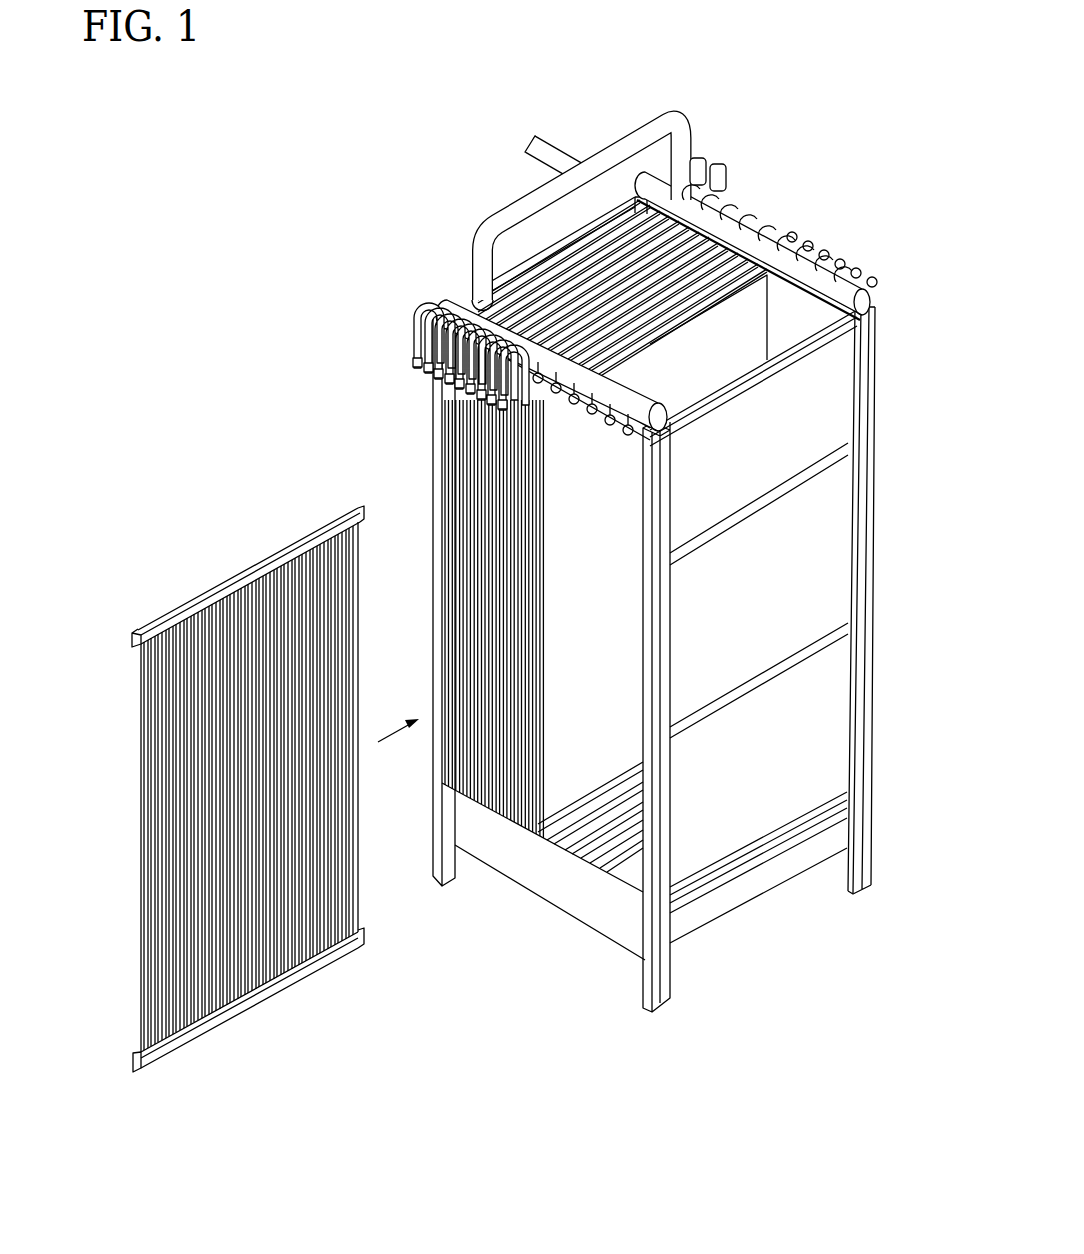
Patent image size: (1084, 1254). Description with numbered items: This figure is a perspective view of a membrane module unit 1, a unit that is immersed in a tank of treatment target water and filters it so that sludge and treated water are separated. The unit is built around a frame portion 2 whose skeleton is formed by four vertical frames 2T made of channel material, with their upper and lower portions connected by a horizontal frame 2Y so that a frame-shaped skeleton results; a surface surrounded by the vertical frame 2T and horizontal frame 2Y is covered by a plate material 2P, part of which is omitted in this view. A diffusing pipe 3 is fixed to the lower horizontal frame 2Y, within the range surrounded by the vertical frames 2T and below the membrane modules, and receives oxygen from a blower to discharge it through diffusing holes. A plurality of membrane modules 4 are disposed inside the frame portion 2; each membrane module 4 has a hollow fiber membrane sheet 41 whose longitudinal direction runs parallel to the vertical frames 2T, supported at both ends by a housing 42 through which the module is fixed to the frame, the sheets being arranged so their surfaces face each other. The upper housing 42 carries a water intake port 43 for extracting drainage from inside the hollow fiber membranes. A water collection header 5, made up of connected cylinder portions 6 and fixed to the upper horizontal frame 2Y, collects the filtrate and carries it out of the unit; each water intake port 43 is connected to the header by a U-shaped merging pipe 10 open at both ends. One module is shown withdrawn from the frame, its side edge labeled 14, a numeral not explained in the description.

The membrane module unit 1 is at (455, 150).
The frame portion 2 is at (642, 599).
The vertical frame 2T is at (433, 470).
The horizontal frame 2Y is at (557, 243).
The plate material 2P is at (823, 540).
The diffusing pipe 3 is at (640, 863).
The membrane module 4 is at (425, 636).
The water collection header 5 is at (644, 169).
The cylinder portion 6 is at (718, 210).
The merging pipe 10 is at (718, 170).
The side frame of membrane element 14 is at (359, 646).
The hollow fiber membrane sheet 41 is at (215, 747).
The housing 42 is at (251, 576).
The water intake port 43 is at (364, 516).